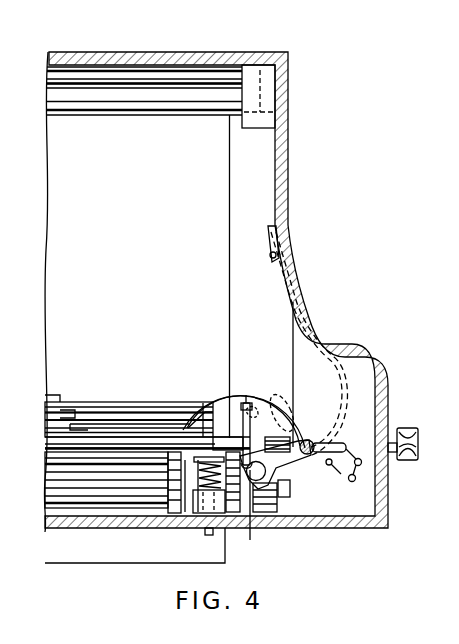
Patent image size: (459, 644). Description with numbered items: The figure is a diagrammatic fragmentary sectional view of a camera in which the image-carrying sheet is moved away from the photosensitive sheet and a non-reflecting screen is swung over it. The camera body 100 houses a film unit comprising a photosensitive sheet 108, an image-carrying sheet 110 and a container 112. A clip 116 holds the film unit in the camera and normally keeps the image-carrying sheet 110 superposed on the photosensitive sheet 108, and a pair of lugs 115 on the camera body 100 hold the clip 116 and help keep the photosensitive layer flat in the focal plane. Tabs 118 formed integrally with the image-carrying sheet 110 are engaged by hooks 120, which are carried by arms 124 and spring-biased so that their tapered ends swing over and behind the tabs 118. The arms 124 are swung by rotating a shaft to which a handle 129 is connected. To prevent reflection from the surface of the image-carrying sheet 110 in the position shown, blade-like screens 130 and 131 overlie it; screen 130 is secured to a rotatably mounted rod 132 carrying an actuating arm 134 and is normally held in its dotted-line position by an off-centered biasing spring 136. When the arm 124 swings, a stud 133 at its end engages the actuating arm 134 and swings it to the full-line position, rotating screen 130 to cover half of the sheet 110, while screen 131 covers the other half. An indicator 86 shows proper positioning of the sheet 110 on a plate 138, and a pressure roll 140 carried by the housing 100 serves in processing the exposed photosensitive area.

The indicator 86 is at (207, 533).
The camera body 100 is at (283, 163).
The photosensitive sheet 108 is at (137, 250).
The image-carrying sheet 110 is at (207, 412).
The container 112 is at (93, 407).
The lugs 115 is at (268, 92).
The clip 116 is at (176, 93).
The tabs 118 is at (223, 395).
The hooks 120 is at (229, 400).
The arms 124 is at (244, 405).
The handle 129 is at (405, 428).
The screen 130 is at (287, 240).
The screen 131 is at (63, 415).
The rod 132 is at (309, 441).
The stud 133 is at (250, 538).
The actuating arm 134 is at (288, 480).
The biasing spring 136 is at (358, 467).
The plate 138 is at (63, 443).
The pressure roll 140 is at (106, 487).